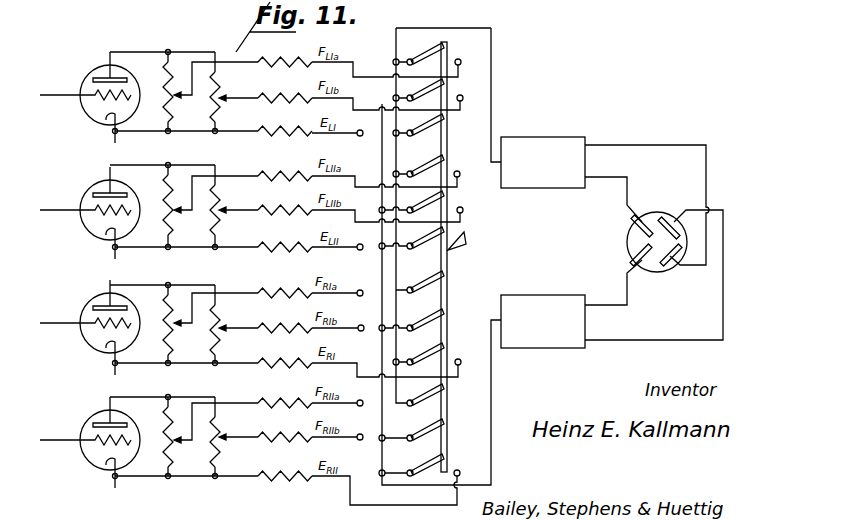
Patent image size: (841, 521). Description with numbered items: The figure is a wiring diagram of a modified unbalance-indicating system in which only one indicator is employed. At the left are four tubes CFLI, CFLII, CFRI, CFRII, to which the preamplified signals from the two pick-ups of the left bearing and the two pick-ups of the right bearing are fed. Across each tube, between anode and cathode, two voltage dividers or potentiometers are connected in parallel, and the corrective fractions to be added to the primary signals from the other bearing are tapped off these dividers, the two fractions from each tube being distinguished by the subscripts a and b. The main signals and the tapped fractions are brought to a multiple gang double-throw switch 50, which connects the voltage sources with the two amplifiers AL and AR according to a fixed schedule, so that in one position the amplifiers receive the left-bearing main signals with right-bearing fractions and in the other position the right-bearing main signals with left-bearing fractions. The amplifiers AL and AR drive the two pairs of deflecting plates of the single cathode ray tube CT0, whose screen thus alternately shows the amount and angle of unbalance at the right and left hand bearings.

The multiple gang double-throw switch 50 is at (448, 272).
The amplifier AL is at (543, 162).
The amplifier AR is at (543, 321).
The cathode ray tube CT0 is at (638, 242).
The tube CFLI is at (84, 80).
The tube CFLII is at (88, 178).
The tube CFRI is at (84, 298).
The tube CFRII is at (82, 416).